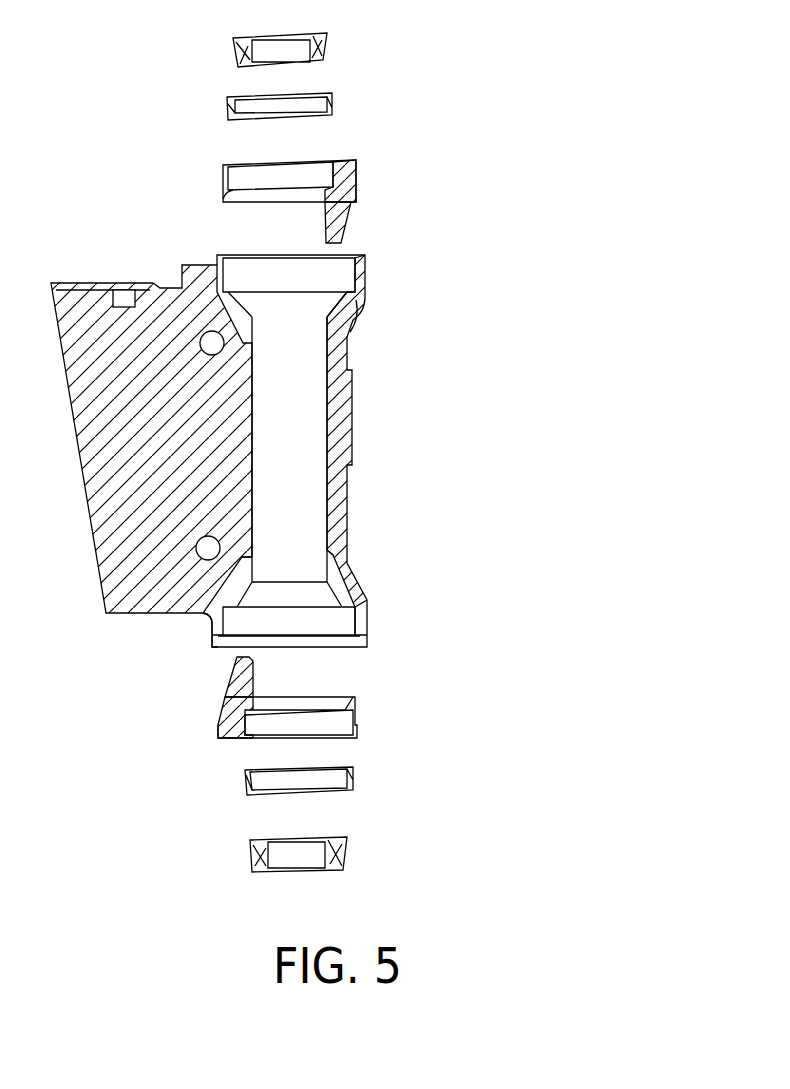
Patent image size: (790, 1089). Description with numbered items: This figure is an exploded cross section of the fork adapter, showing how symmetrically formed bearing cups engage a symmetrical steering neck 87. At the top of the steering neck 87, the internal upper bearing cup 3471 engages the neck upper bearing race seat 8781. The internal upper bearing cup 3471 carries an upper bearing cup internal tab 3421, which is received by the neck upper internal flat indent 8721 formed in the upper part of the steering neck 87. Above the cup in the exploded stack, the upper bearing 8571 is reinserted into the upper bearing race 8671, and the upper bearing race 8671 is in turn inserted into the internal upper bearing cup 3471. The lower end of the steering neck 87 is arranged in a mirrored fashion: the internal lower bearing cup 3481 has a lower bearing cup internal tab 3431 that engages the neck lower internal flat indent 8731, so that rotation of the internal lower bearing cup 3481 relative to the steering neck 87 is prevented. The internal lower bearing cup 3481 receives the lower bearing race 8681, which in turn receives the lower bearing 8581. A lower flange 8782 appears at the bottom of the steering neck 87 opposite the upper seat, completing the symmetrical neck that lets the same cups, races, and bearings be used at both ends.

The steering neck 87 is at (353, 427).
The neck upper bearing race seat 8781 is at (223, 272).
The lower flange 8782 is at (367, 605).
The neck upper internal flat indent 8721 is at (353, 320).
The neck lower internal flat indent 8731 is at (212, 613).
The upper bearing 8571 is at (327, 47).
The upper bearing race 8671 is at (335, 103).
The internal upper bearing cup 3471 is at (357, 183).
The upper bearing cup internal tab 3421 is at (345, 230).
The internal lower bearing cup 3481 is at (360, 732).
The lower bearing cup internal tab 3431 is at (232, 682).
The lower bearing race 8681 is at (355, 786).
The lower bearing 8581 is at (348, 856).